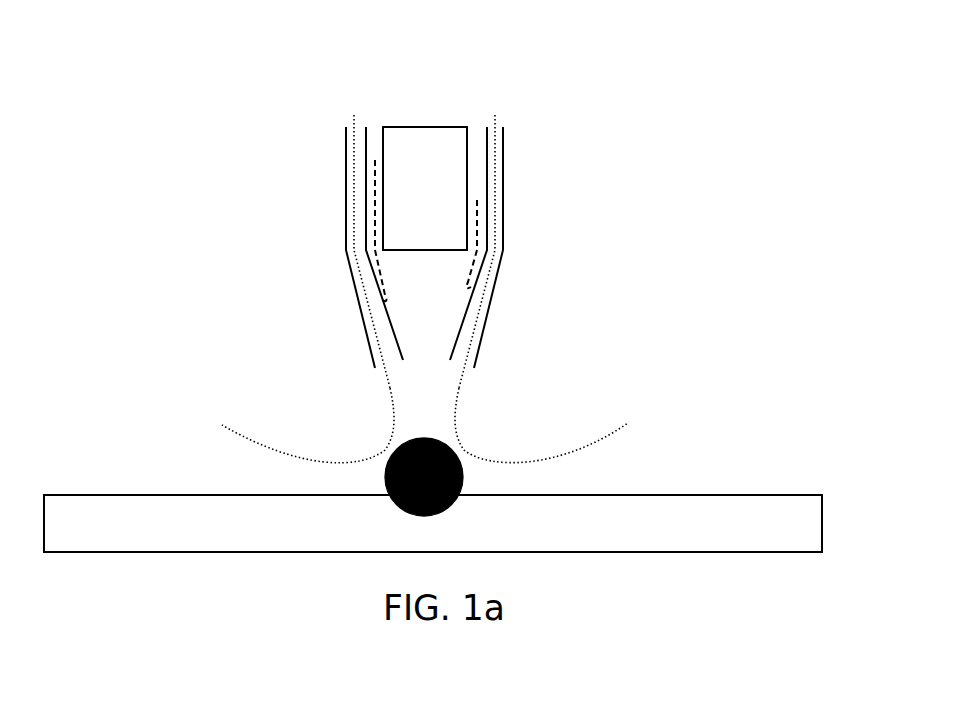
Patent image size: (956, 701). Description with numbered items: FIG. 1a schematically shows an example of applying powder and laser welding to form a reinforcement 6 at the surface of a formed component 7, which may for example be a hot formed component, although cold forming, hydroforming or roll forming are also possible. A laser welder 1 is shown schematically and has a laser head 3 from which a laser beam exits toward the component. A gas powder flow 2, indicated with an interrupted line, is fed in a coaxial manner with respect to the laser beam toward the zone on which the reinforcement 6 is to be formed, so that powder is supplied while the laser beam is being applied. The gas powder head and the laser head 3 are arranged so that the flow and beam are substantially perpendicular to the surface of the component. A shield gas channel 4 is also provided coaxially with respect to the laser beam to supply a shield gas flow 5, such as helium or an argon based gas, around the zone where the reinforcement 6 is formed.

The laser welder 1 is at (383, 148).
The gas powder flow 2 is at (477, 208).
The laser head 3 is at (397, 330).
The shield gas channel 4 is at (357, 195).
The shield gas flow 5 is at (237, 427).
The reinforcement 6 is at (455, 452).
The formed component 7 is at (658, 510).